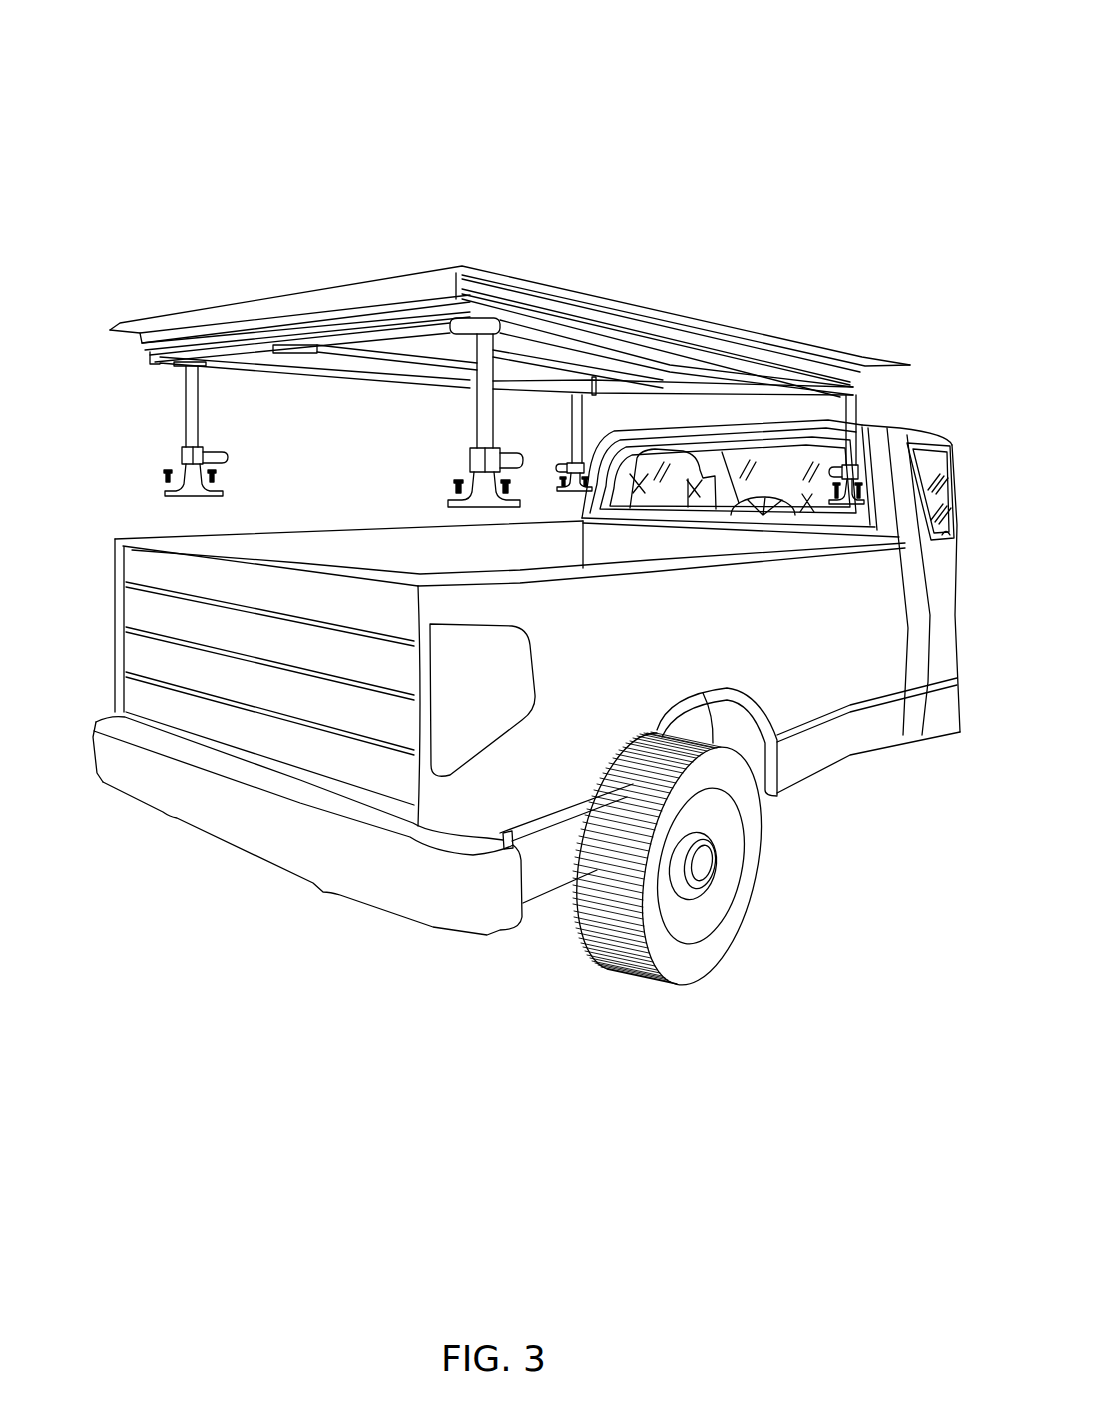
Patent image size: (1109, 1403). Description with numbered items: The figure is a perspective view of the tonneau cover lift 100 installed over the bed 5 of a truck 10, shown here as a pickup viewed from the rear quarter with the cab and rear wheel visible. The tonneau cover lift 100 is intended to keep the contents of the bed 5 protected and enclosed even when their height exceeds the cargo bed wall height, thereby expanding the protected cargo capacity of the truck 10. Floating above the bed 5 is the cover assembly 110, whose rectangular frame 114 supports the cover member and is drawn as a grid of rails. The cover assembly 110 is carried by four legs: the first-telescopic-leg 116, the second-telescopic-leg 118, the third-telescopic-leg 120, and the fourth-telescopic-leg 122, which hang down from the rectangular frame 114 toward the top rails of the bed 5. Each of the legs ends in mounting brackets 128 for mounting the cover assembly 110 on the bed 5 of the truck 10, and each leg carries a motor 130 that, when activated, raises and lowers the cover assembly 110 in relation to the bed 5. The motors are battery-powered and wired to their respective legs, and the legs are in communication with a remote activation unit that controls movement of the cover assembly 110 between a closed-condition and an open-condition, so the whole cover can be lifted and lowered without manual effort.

The tonneau cover lift 100 is at (719, 79).
The cover assembly 110 is at (762, 107).
The rectangular frame 114 is at (337, 368).
The first-telescopic-leg 116 is at (571, 418).
The second-telescopic-leg 118 is at (191, 411).
The third-telescopic-leg 120 is at (860, 396).
The fourth-telescopic-leg 122 is at (477, 413).
The mounting brackets 128 is at (190, 489).
The motor 130 is at (523, 470).
The bed 5 is at (375, 548).
The truck 10 is at (826, 687).